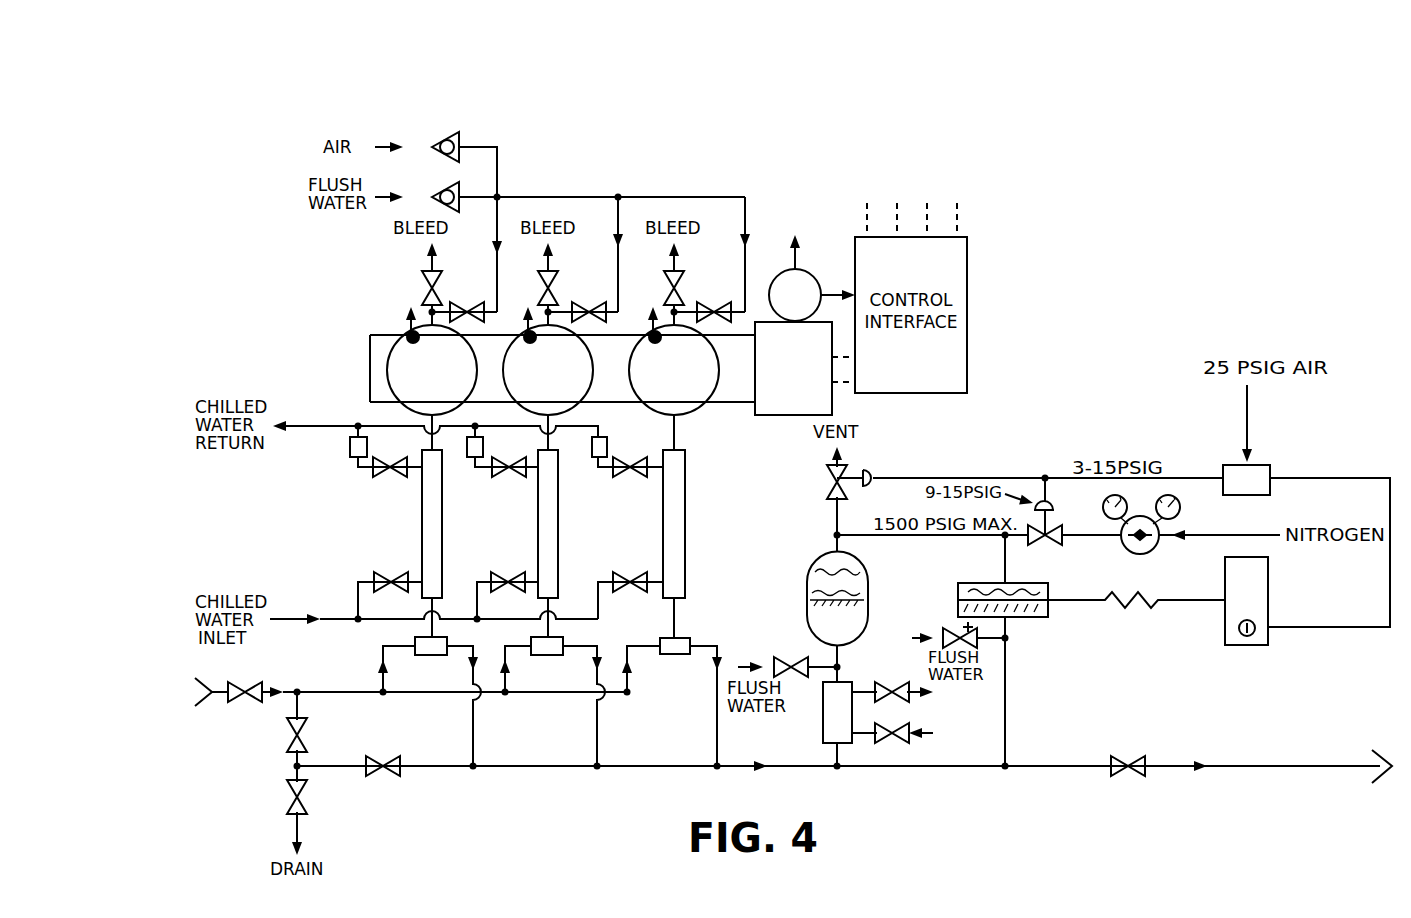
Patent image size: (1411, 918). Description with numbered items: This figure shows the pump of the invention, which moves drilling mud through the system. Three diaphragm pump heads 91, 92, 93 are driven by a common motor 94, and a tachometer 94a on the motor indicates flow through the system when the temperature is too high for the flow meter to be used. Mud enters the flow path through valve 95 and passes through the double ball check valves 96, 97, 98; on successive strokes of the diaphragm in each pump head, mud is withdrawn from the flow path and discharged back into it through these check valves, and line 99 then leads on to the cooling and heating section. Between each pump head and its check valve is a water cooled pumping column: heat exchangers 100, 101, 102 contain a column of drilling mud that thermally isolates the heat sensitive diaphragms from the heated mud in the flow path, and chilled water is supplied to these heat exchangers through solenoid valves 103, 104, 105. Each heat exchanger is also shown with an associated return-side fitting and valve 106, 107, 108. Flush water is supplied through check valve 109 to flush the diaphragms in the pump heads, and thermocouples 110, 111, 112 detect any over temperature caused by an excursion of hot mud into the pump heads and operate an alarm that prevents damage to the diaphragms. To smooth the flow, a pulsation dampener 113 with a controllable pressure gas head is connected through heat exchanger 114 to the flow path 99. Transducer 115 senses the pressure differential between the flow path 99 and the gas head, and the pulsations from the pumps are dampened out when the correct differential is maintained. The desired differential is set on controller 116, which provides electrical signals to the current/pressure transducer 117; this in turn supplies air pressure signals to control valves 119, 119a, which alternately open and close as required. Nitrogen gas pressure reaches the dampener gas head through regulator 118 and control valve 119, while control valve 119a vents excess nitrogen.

The pump head 91 is at (477, 376).
The pump head 92 is at (593, 376).
The pump head 93 is at (719, 376).
The motor 94 is at (758, 415).
The tachometer 94a is at (818, 284).
The valve 95 is at (240, 683).
The double ball check valve 96 is at (414, 643).
The double ball check valve 97 is at (534, 642).
The double ball check valve 98 is at (660, 642).
The line 99 is at (740, 765).
The heat exchanger 100 is at (443, 528).
The heat exchanger 101 is at (559, 528).
The heat exchanger 102 is at (686, 528).
The solenoid valve 103 is at (386, 575).
The solenoid valve 104 is at (504, 575).
The solenoid valve 105 is at (632, 575).
The flow indicator and valve 106 is at (367, 448).
The flow indicator and valve 107 is at (483, 448).
The flow indicator and valve 108 is at (607, 449).
The check valve 109 is at (441, 189).
The thermocouple 110 is at (408, 332).
The thermocouple 111 is at (525, 332).
The thermocouple 112 is at (650, 332).
The pulsation dampener 113 is at (868, 628).
The heat exchanger 114 is at (848, 682).
The transducer 115 is at (994, 582).
The controller 116 is at (1270, 605).
The current/pressure transducer 117 is at (1256, 464).
The regulator 118 is at (1159, 546).
The control valve 119 is at (1049, 525).
The control valve 119a is at (834, 492).